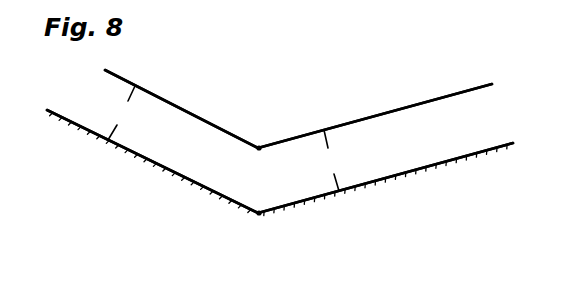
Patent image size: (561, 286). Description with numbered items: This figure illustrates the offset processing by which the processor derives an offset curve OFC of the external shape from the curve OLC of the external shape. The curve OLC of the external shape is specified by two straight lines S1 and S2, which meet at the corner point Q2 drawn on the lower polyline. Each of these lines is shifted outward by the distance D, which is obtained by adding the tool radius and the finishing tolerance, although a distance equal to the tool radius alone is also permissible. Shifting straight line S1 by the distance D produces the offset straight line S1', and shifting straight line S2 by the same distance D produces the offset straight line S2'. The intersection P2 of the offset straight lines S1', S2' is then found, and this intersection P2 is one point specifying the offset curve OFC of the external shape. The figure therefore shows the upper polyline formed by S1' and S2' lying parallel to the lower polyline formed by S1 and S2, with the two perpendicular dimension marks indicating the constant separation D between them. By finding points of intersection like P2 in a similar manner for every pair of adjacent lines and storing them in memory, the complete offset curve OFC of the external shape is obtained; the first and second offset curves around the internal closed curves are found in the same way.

The offset curve of the external shape OFC is at (225, 130).
The curve of the external shape OLC is at (206, 194).
The straight line offset from S1 S1' is at (181, 109).
The straight line offset from S2 S2' is at (375, 111).
The first straight line specifying the curve of the external shape S1 is at (152, 161).
The second straight line specifying the curve of the external shape S2 is at (385, 182).
The intersection of the offset straight lines P2 is at (264, 160).
The original vertex point Q2 is at (266, 227).
The offset distance D is at (223, 138).